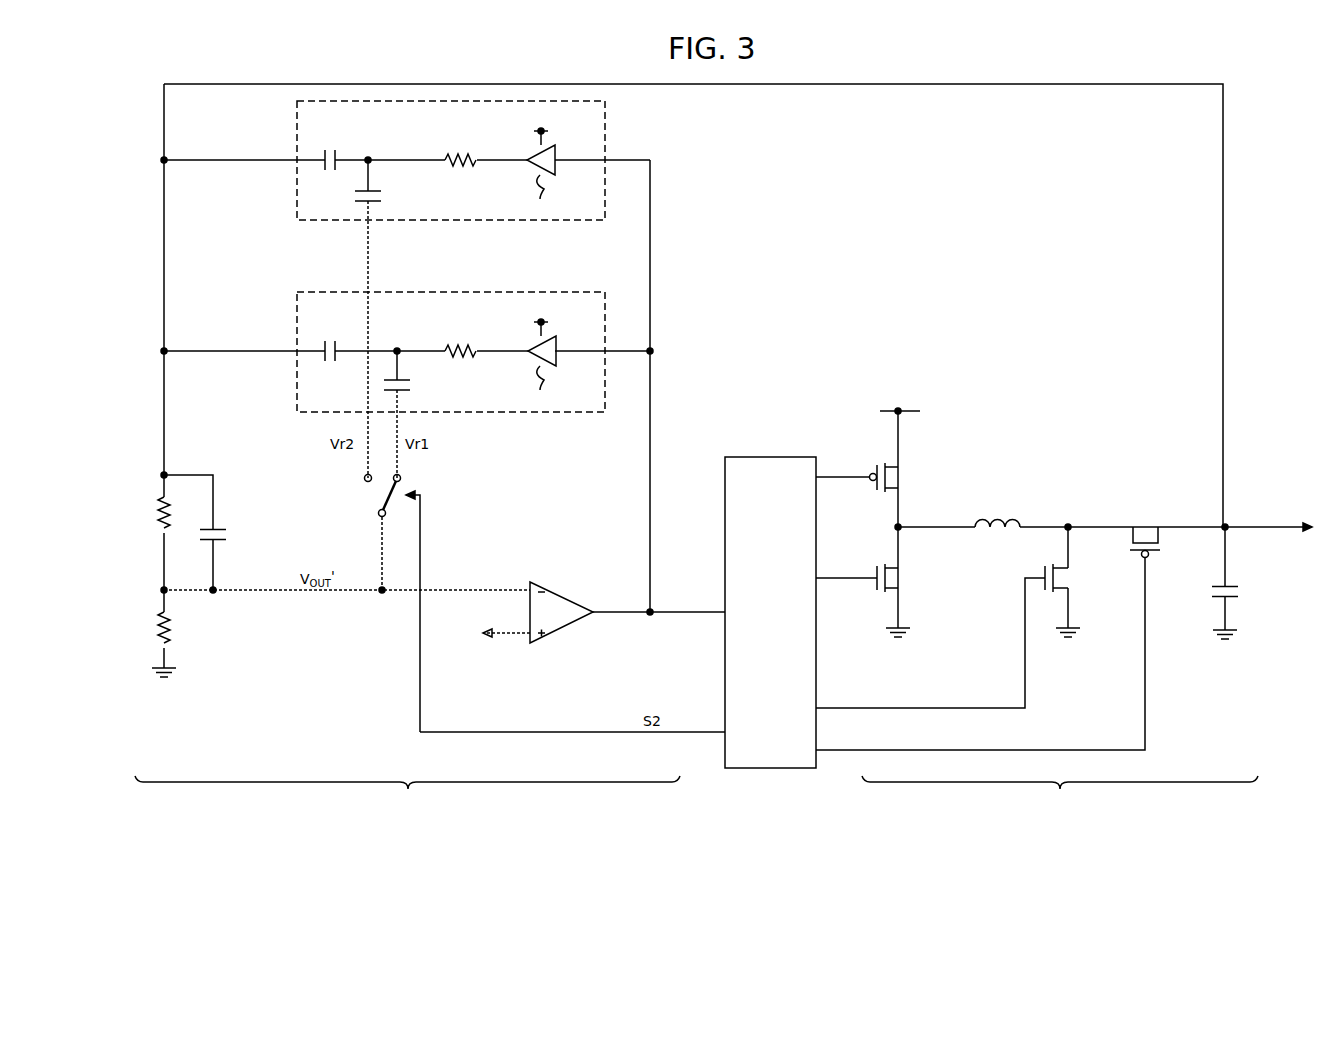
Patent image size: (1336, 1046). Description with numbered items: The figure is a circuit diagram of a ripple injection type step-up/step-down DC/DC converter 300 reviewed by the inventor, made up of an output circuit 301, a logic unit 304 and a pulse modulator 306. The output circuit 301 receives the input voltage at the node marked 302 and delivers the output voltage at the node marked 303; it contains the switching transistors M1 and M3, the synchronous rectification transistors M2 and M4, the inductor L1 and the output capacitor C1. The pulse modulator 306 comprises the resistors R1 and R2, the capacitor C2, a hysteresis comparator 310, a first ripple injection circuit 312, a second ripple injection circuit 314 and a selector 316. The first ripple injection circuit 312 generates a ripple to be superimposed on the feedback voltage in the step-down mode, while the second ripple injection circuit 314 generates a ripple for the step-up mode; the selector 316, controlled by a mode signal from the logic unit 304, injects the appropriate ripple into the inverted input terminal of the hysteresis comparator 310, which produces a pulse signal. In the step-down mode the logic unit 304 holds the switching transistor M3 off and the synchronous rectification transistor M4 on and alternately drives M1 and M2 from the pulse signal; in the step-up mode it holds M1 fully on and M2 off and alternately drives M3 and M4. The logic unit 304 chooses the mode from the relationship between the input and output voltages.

The step-up/step-down DC/DC converter 300 is at (747, 872).
The output circuit 301 is at (1060, 796).
The input voltage terminal 302 is at (882, 408).
The output voltage terminal 303 is at (1284, 534).
The logic unit 304 is at (768, 770).
The pulse modulator 306 is at (407, 796).
The hysteresis comparator 310 is at (562, 620).
The first ripple injection circuit 312 is at (572, 414).
The second ripple injection circuit 314 is at (572, 222).
The selector 316 is at (362, 492).
The resistor R1 is at (155, 524).
The resistor R2 is at (155, 629).
The output capacitor C1 is at (1210, 606).
The capacitor C2 is at (230, 534).
The inductor L1 is at (999, 520).
The switching transistor M1 is at (905, 479).
The synchronous rectification transistor M2 is at (905, 575).
The switching transistor M3 is at (1075, 575).
The synchronous rectification transistor M4 is at (1146, 522).